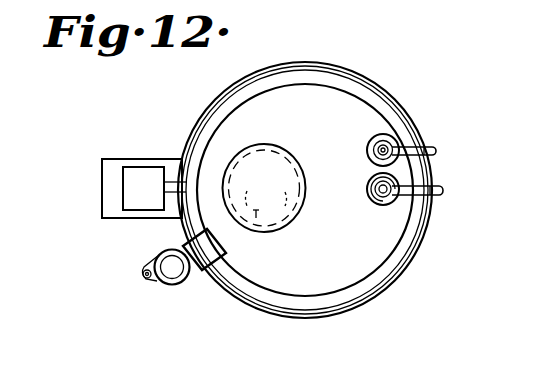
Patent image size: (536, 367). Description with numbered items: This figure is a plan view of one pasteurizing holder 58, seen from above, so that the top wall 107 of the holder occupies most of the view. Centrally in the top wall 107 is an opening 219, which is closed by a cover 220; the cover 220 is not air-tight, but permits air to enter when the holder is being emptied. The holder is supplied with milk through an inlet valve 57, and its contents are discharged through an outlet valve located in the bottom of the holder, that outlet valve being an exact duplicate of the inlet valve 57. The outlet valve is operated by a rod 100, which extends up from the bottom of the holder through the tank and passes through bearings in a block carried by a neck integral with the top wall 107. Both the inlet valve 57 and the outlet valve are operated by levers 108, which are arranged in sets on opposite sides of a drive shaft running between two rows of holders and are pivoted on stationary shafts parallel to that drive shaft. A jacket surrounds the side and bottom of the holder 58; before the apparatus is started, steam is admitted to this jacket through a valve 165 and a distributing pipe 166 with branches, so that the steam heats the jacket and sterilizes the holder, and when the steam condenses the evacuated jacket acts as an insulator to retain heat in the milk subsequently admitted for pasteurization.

The inlet valve 57 is at (370, 139).
The pasteurizing holder 58 is at (305, 190).
The rod 100 is at (382, 202).
The top wall 107 is at (305, 190).
The lever 108 is at (444, 192).
The valve 165 is at (173, 285).
The distributing pipe 166 is at (256, 313).
The opening 219 is at (264, 188).
The cover 220 is at (264, 188).